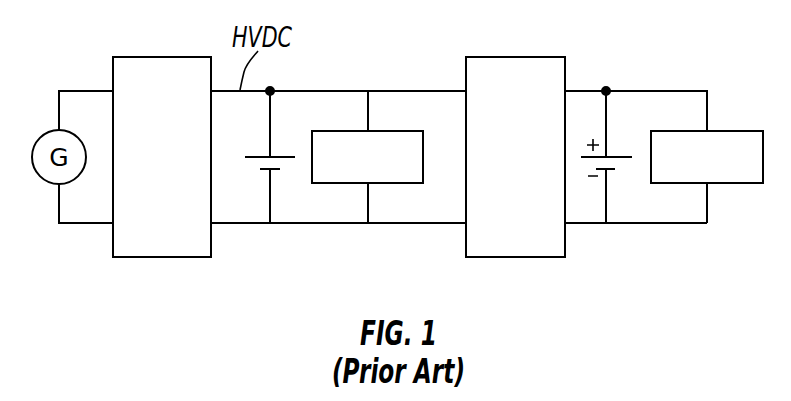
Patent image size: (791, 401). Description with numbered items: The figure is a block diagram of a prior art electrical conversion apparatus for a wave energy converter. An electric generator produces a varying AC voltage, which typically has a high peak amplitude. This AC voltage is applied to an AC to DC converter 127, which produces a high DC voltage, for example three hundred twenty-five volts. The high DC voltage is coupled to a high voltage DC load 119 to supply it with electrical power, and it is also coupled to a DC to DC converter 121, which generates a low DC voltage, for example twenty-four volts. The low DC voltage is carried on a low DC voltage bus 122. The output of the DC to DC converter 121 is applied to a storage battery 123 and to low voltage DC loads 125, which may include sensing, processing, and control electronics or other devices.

The AC to DC converter 127 is at (182, 169).
The high voltage DC load 119 is at (388, 169).
The DC to DC converter 121 is at (535, 169).
The low DC voltage bus 122 is at (677, 90).
The storage battery 123 is at (623, 170).
The low voltage DC loads 125 is at (727, 169).